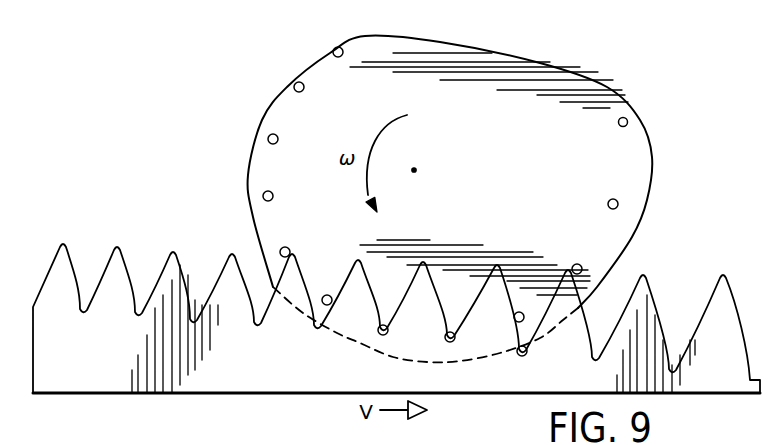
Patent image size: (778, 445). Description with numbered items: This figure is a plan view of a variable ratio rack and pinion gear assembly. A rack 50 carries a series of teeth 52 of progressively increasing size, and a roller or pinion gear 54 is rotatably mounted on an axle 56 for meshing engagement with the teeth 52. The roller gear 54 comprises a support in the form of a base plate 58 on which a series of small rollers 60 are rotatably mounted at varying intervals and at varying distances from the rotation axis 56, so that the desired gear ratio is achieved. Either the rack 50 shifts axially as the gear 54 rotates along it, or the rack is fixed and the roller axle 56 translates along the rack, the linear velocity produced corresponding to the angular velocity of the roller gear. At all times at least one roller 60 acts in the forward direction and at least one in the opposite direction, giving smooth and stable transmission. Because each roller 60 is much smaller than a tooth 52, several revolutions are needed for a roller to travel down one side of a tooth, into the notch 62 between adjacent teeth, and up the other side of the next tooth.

The rack 50 is at (232, 382).
The teeth 52 is at (228, 263).
The roller or pinion gear 54 is at (655, 123).
The axle 56 is at (416, 170).
The base plate 58 is at (620, 227).
The small rollers 60 is at (264, 193).
The notch 62 is at (382, 330).